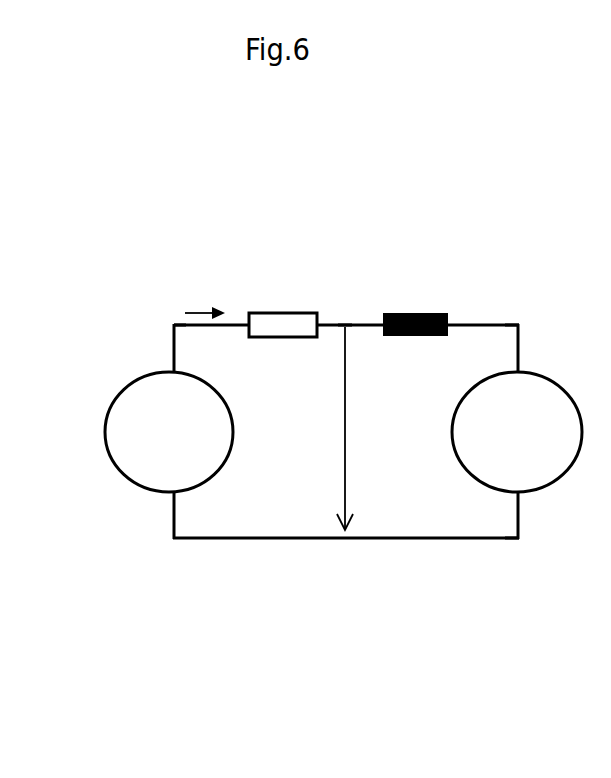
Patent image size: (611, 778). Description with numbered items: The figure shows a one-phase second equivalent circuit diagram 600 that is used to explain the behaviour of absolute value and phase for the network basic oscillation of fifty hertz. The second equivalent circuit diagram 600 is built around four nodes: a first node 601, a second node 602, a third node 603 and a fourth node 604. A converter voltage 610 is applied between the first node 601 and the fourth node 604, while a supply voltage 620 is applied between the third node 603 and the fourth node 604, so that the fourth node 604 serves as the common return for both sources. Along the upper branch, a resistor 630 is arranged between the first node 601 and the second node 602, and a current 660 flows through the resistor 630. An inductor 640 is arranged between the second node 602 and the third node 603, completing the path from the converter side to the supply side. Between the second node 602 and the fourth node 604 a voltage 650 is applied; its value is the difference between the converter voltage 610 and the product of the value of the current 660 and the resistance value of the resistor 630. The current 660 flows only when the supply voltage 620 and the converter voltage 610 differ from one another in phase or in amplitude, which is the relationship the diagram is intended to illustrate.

The second equivalent circuit diagram 600 is at (292, 578).
The first node 601 is at (172, 323).
The second node 602 is at (345, 323).
The third node 603 is at (519, 324).
The fourth node 604 is at (518, 540).
The converter voltage 610 is at (189, 471).
The supply voltage 620 is at (537, 471).
The resistor 630 is at (274, 311).
The inductor 640 is at (415, 312).
The voltage 650 is at (346, 450).
The current 660 is at (200, 309).